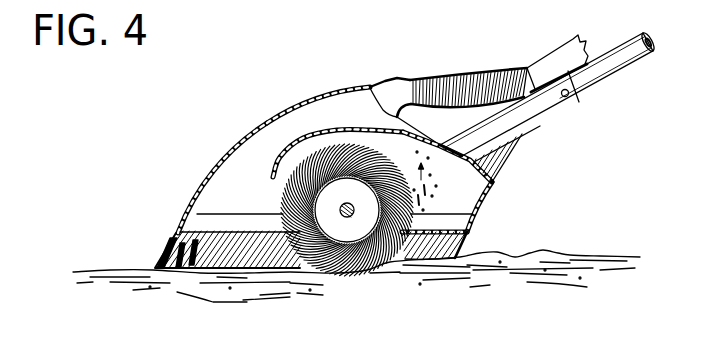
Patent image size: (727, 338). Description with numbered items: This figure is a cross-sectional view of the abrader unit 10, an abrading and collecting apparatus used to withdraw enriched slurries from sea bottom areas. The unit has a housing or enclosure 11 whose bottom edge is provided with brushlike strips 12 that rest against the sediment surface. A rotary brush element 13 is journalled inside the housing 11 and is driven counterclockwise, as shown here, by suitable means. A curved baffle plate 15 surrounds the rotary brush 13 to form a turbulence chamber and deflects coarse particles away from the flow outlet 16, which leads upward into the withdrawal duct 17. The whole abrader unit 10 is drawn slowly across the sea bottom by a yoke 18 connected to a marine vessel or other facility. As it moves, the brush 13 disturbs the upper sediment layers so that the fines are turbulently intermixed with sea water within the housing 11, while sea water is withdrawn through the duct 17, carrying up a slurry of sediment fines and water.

The abrader unit 10 is at (285, 102).
The housing 11 is at (243, 170).
The brushlike strips 12 is at (172, 250).
The rotary brush element 13 is at (364, 266).
The baffle plate 15 is at (337, 128).
The flow outlet 16 is at (286, 135).
The withdrawal duct 17 is at (548, 60).
The yoke 18 is at (538, 118).